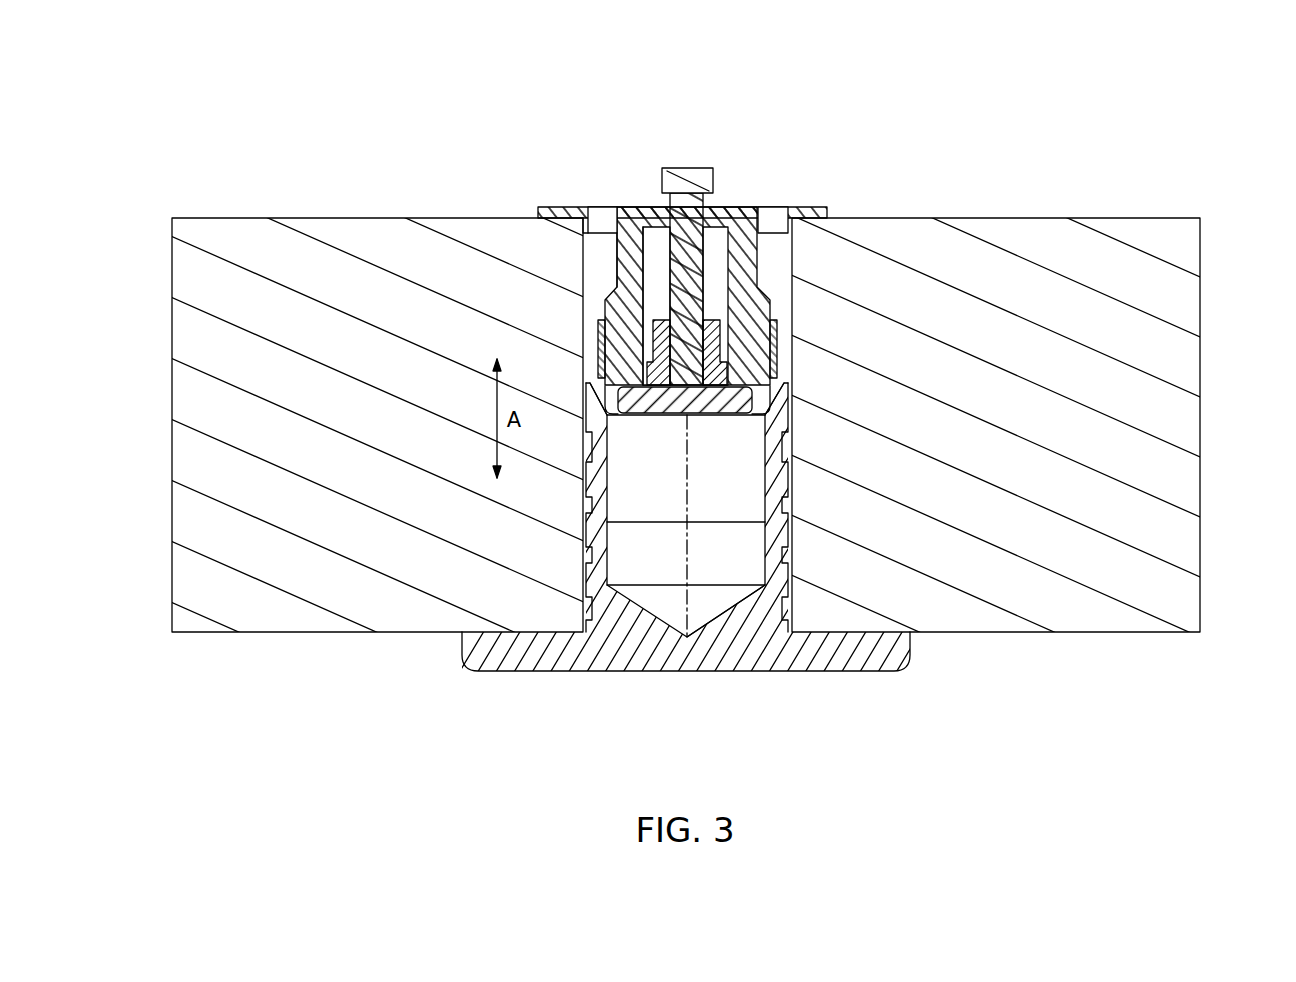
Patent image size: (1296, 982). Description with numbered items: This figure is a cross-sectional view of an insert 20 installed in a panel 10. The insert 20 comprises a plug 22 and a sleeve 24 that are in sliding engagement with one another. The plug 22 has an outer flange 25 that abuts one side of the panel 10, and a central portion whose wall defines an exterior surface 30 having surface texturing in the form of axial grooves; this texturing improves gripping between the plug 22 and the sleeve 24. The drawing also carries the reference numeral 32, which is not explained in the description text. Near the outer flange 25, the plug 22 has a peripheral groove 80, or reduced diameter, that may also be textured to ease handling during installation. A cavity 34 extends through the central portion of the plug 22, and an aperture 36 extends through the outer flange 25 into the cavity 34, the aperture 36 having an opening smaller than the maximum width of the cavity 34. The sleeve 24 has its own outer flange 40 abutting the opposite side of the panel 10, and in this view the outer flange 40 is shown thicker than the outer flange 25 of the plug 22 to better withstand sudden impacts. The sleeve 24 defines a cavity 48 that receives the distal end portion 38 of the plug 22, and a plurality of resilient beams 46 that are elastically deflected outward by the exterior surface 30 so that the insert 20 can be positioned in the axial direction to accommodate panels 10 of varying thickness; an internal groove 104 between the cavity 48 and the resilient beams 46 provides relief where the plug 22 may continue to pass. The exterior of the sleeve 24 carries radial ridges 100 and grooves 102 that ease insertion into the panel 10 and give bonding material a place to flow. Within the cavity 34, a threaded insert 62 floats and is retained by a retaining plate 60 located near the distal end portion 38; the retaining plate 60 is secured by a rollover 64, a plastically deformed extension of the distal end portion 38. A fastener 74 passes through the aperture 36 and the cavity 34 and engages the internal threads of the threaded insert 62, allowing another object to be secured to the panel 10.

The panel 10 is at (998, 416).
The insert 20 is at (880, 393).
The plug 22 is at (643, 230).
The sleeve 24 is at (635, 632).
The outer flange 25 is at (583, 253).
The exterior surface 30 is at (768, 308).
The body wall 32 is at (748, 322).
The cavity 34 is at (660, 260).
The aperture 36 is at (714, 210).
The distal end portion 38 is at (597, 383).
The outer flange 40 is at (870, 650).
The resilient beams 46 is at (775, 350).
The cavity 48 is at (722, 450).
The retaining plate 60 is at (772, 368).
The threaded insert 62 is at (620, 285).
The rollover 64 is at (792, 422).
The fastener 74 is at (686, 168).
The peripheral groove 80 is at (618, 243).
The radial ridges 100 is at (587, 550).
The grooves 102 is at (792, 532).
The internal groove 104 is at (792, 395).